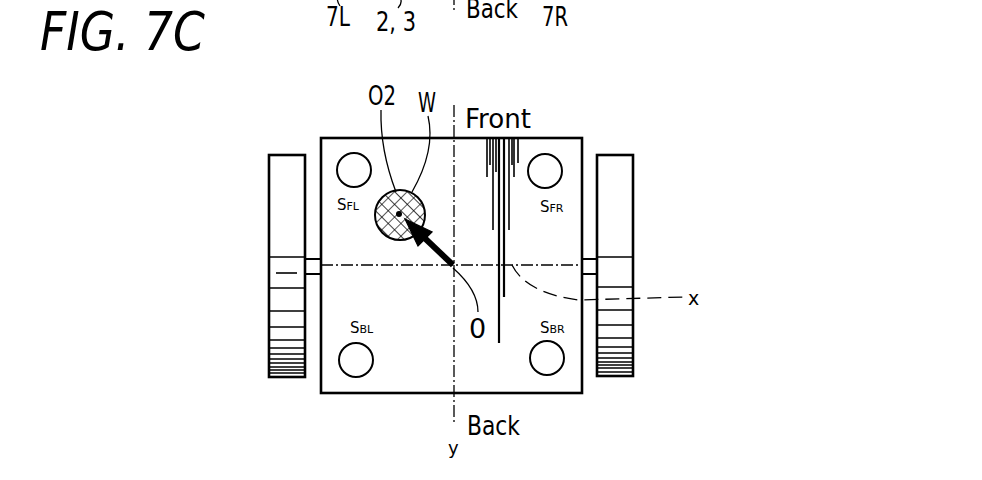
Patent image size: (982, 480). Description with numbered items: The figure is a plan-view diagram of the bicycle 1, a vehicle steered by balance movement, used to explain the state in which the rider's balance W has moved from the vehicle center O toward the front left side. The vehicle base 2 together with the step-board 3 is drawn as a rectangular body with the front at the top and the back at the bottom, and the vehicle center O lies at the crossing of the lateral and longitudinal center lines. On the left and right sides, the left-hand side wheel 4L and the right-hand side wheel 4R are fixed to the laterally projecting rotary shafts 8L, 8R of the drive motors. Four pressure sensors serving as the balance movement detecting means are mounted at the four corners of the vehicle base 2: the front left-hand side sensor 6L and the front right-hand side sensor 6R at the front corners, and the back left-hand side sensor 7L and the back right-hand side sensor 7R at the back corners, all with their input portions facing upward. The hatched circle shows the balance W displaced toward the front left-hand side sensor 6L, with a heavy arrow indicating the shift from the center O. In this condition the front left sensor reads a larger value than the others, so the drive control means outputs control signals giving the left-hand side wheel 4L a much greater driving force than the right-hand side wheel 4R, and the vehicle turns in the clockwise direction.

The bicycle 1 is at (308, 142).
The vehicle base 2 is at (451, 301).
The step-board 3 is at (400, 394).
The left-hand side wheel 4L is at (268, 210).
The right-hand side wheel 4R is at (634, 212).
The front left-hand side sensor 6L is at (345, 160).
The front right-hand side sensor 6R is at (549, 165).
The back left-hand side sensor 7L is at (357, 367).
The back right-hand side sensor 7R is at (548, 365).
The rotary shaft 8L is at (308, 266).
The rotary shaft 8R is at (592, 267).